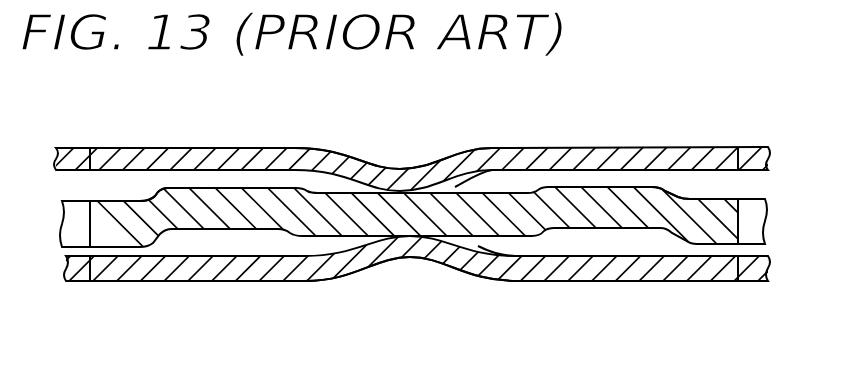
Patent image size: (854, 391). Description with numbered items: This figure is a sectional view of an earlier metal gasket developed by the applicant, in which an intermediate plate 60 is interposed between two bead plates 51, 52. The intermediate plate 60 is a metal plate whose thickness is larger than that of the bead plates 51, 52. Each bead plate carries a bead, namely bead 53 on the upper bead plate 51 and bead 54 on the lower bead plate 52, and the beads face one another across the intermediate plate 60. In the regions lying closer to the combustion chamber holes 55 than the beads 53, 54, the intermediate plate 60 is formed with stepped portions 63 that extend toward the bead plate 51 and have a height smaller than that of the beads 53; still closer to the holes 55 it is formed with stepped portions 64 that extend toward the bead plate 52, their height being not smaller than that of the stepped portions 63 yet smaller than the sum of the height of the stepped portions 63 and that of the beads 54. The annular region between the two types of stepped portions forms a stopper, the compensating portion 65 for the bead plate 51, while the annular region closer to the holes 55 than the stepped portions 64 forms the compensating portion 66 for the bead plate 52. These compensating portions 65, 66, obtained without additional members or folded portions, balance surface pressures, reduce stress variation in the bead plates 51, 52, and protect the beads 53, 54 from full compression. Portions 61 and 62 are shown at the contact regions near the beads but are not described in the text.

The bead plate 51 is at (333, 160).
The bead plate 52 is at (226, 268).
The bead 53 is at (407, 182).
The bead 54 is at (399, 250).
The combustion chamber hole 55 is at (87, 162).
The intermediate plate 60 is at (705, 212).
The upper contact portion 61 is at (492, 192).
The lower contact portion 62 is at (509, 256).
The stepped portion 63 is at (294, 153).
The stepped portion 64 is at (152, 194).
The compensating portion 65 is at (213, 187).
The compensating portion 66 is at (122, 252).